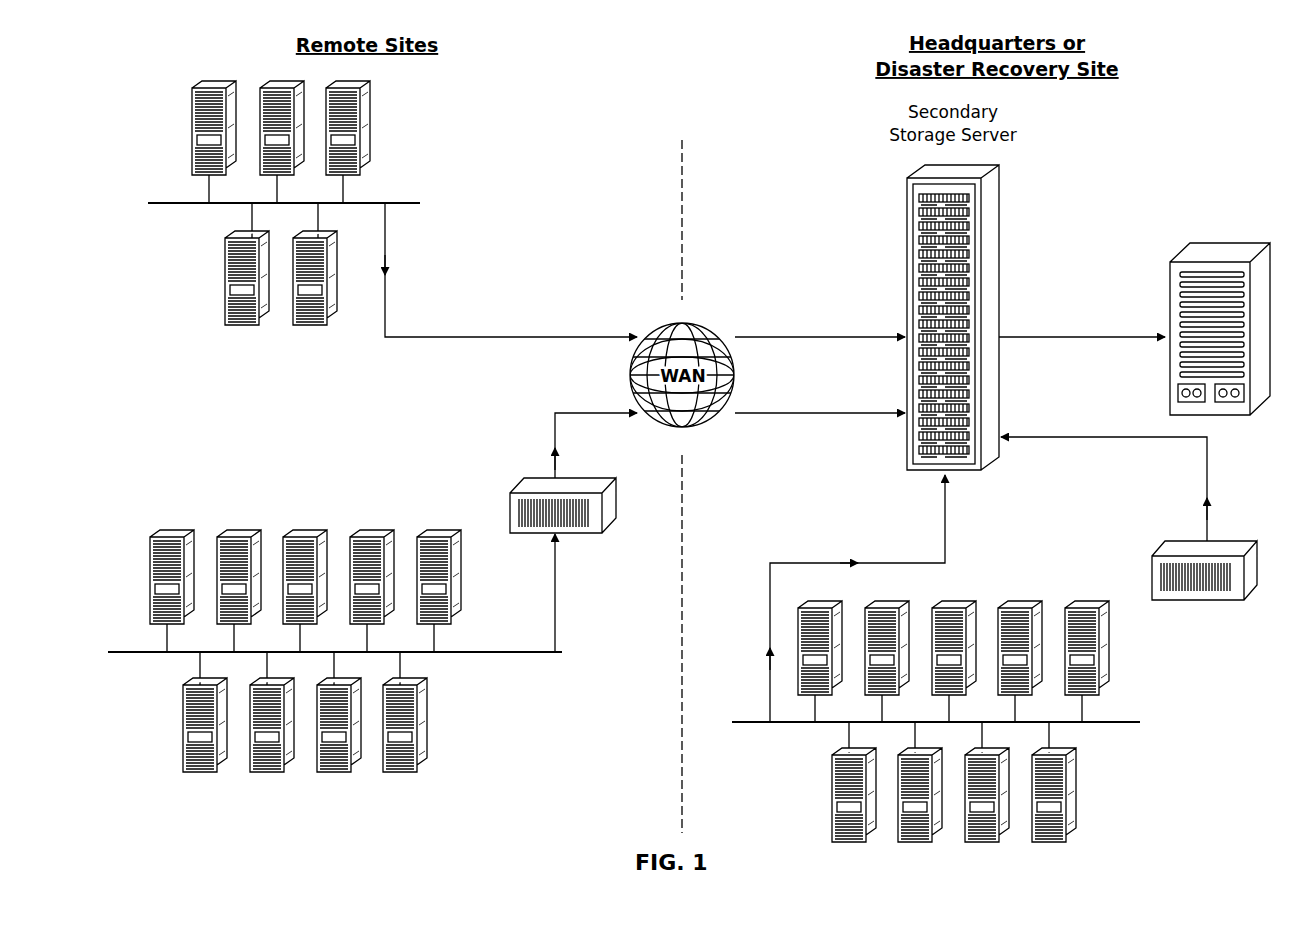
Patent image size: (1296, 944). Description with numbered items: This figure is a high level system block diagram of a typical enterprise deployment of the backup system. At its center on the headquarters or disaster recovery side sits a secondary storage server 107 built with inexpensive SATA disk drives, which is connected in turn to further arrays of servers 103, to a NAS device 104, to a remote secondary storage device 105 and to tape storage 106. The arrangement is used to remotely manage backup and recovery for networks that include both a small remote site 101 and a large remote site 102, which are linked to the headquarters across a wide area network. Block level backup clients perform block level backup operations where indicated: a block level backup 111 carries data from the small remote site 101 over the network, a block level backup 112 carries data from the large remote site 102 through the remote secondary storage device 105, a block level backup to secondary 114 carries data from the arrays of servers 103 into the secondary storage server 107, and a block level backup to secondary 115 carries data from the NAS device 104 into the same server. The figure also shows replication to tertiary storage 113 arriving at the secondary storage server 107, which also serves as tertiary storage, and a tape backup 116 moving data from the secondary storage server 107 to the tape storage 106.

The small remote site 101 is at (205, 73).
The large remote site 102 is at (178, 508).
The arrays of servers 103 is at (1118, 783).
The NAS device 104 is at (1198, 602).
The remote secondary storage device 105 is at (544, 536).
The tape storage 106 is at (1212, 418).
The secondary storage server 107 is at (905, 250).
The block level backup 111 is at (514, 306).
The block level backup 112 is at (554, 688).
The replication to tertiary storage 113 is at (820, 448).
The block level backup to secondary 114 is at (820, 509).
The block level backup to secondary 115 is at (1111, 496).
The tape backup 116 is at (1088, 301).